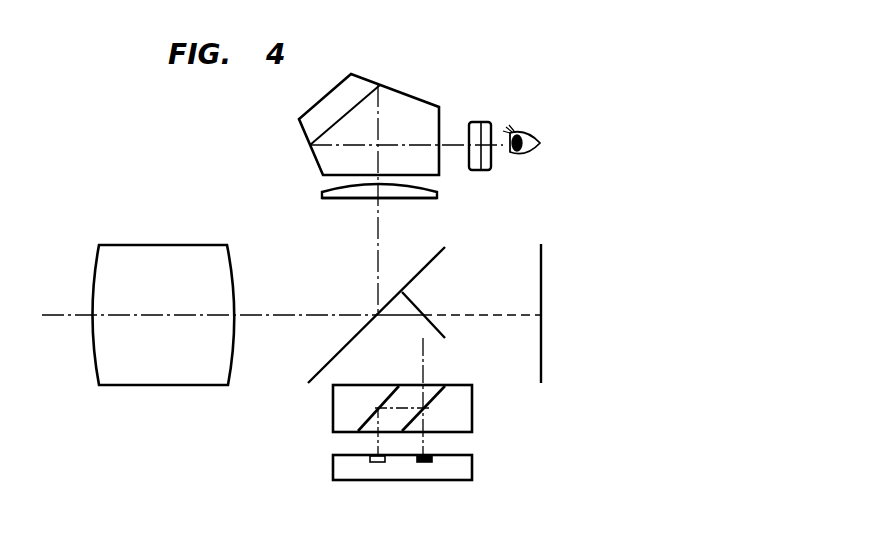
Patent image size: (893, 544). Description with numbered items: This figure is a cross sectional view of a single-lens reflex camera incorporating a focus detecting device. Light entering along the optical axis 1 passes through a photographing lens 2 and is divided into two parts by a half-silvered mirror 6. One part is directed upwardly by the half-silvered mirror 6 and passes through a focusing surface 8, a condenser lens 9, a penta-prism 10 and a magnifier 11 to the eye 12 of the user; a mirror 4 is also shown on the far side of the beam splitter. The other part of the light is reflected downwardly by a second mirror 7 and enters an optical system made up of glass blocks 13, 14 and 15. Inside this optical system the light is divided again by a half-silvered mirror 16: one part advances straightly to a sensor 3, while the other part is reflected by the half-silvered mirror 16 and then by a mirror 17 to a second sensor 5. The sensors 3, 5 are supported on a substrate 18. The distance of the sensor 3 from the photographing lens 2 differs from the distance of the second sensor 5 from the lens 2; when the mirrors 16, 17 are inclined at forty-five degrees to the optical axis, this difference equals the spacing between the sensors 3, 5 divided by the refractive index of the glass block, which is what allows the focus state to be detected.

The optical axis 1 is at (270, 316).
The photographing lens 2 is at (172, 385).
The sensor 3 is at (422, 467).
The mirror 4 is at (542, 358).
The second sensor 5 is at (375, 465).
The half-silvered mirror 6 is at (430, 263).
The second mirror 7 is at (420, 302).
The focusing surface 8 is at (410, 200).
The condenser lens 9 is at (437, 193).
The penta-prism 10 is at (415, 97).
The magnifier 11 is at (485, 123).
The eye 12 is at (532, 134).
The glass block 13 is at (430, 395).
The glass block 14 is at (462, 387).
The glass block 15 is at (375, 395).
The half-silvered mirror 16 is at (428, 402).
The mirror 17 is at (368, 412).
The substrate 18 is at (448, 473).